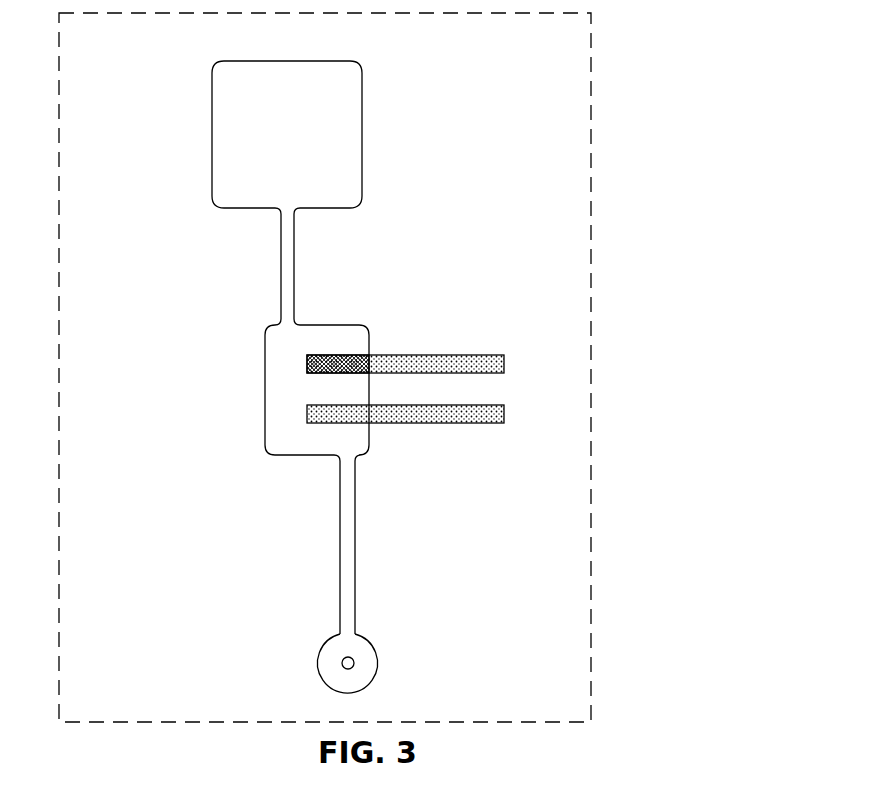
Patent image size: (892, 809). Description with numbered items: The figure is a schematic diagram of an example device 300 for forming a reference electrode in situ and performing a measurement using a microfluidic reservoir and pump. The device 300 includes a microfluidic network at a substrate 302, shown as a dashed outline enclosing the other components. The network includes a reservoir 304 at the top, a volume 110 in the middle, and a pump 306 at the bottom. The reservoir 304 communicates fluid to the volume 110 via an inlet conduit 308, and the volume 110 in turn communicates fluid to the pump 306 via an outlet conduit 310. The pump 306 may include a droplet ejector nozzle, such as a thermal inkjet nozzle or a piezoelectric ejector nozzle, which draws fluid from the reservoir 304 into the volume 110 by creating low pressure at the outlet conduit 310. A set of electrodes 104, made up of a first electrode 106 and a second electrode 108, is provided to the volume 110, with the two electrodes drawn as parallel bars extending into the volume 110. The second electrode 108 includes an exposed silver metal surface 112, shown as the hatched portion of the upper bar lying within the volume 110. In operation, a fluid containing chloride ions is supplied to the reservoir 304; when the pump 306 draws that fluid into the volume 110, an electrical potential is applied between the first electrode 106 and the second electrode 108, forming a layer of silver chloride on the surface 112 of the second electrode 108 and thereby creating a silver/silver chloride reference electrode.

The device 300 is at (680, 112).
The substrate 302 is at (570, 260).
The reservoir 304 is at (235, 135).
The pump 306 is at (335, 655).
The inlet conduit 308 is at (287, 279).
The outlet conduit 310 is at (345, 567).
The volume 110 is at (282, 391).
The set of electrodes 104 is at (520, 473).
The first electrode 106 is at (430, 417).
The second electrode 108 is at (415, 365).
The exposed silver metal surface 112 is at (313, 357).